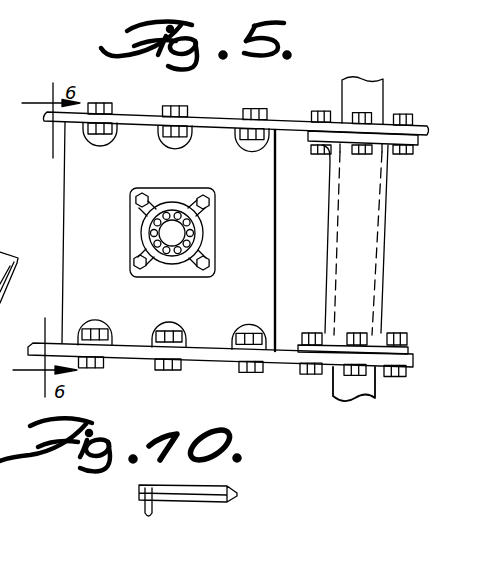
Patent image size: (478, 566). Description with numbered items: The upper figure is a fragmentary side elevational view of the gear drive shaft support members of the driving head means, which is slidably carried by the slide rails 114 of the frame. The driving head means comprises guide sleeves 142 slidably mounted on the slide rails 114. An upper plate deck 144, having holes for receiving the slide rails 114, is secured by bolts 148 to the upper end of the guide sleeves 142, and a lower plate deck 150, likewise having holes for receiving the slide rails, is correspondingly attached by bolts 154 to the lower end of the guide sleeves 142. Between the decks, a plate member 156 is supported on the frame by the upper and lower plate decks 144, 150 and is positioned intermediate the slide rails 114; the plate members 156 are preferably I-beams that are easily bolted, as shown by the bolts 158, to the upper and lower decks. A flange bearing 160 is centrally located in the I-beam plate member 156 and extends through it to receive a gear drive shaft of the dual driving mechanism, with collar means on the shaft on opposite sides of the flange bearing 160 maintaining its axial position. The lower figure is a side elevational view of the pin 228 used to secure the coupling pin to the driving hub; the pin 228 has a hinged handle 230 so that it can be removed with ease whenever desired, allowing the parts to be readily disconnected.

In FIG. 5, the slide rails 114 is at (406, 66).
In FIG. 5, the guide sleeves 142 is at (390, 207).
In FIG. 5, the upper plate deck 144 is at (223, 120).
In FIG. 5, the bolts 148 is at (318, 148).
In FIG. 5, the lower plate deck 150 is at (284, 362).
In FIG. 5, the bolts 154 is at (397, 382).
In FIG. 5, the plate members 156 is at (75, 172).
In FIG. 5, the bolts 158 is at (107, 112).
In FIG. 5, the flange bearing 160 is at (133, 242).
In FIG. 10, the pin 228 is at (214, 492).
In FIG. 10, the hinged handle 230 is at (142, 505).